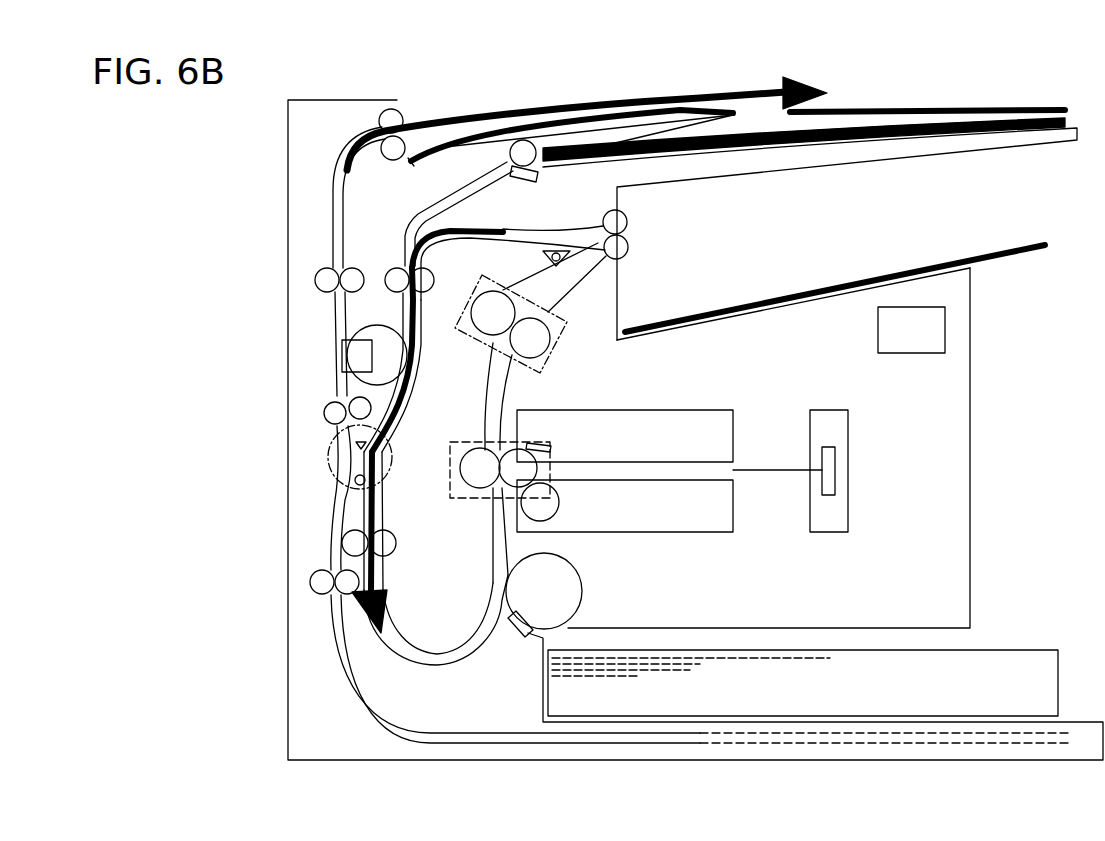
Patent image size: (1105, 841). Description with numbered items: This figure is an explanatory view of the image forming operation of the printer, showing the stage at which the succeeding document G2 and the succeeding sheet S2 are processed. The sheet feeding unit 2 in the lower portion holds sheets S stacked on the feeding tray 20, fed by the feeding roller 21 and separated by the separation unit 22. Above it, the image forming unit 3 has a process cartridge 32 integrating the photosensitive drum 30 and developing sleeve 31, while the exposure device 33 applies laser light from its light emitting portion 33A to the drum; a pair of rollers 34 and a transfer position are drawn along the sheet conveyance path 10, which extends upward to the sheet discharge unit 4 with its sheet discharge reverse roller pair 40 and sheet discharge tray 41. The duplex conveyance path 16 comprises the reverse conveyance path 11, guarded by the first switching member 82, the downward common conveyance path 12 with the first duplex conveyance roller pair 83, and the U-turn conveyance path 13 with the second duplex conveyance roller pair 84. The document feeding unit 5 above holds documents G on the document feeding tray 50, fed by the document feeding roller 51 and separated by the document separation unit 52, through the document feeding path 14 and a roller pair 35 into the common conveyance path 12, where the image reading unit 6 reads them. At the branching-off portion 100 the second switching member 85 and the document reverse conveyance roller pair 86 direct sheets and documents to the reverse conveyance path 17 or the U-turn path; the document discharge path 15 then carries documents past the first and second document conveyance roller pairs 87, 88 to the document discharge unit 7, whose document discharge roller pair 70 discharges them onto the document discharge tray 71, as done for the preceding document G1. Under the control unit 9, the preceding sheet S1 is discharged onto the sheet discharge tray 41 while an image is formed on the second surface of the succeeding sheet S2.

The document discharge unit 7 is at (488, 62).
The document discharge roller pair 70 is at (379, 124).
The document discharge tray 71 is at (457, 137).
The document feeding roller 51 is at (524, 138).
The succeeding document G2 is at (632, 99).
The document feeding unit 5 is at (740, 122).
The preceding document G1 is at (866, 110).
The document G is at (906, 118).
The document feeding tray 50 is at (1059, 130).
The document discharge path 15 is at (334, 194).
The document feeding path 14 is at (430, 206).
The document separation unit 52 is at (535, 181).
The sheet discharge unit 4 is at (734, 232).
The preceding sheet S1 is at (1045, 248).
The second document conveyance roller pair 88 is at (314, 280).
The first duplex conveyance roller pair 83 is at (393, 271).
The reverse conveyance path 11 is at (465, 238).
The first switching member 82 is at (562, 266).
The sheet discharge reverse roller pair 40 is at (630, 245).
The sheet discharge tray 41 is at (712, 320).
The image reading unit 6 is at (348, 338).
The conveyance roller pair 35 is at (558, 356).
The image forming unit 3 is at (760, 386).
The control unit 9 is at (913, 356).
The first document conveyance roller pair 87 is at (326, 412).
The sheet conveyance path 10 is at (486, 395).
The process cartridge 32 is at (716, 410).
The common conveyance path 12 is at (396, 394).
The photosensitive drum 30 is at (550, 448).
The exposure device 33 is at (850, 445).
The second switching member 85 is at (350, 464).
The branching-off portion 100 is at (335, 466).
The light emitting portion 33A is at (838, 492).
The reverse conveyance path 17 is at (338, 512).
The second duplex conveyance roller pair 84 is at (383, 534).
The developing sleeve 31 is at (562, 500).
The registration roller pair 34 is at (472, 488).
The U-turn conveyance path 13 is at (378, 570).
The document reverse conveyance roller pair 86 is at (310, 586).
The feeding roller 21 is at (584, 590).
The sheet feeding unit 2 is at (836, 650).
The sheet S is at (1028, 652).
The succeeding sheet S2 is at (351, 620).
The separation unit 22 is at (518, 634).
The duplex conveyance path 16 is at (432, 665).
The feeding tray 20 is at (546, 698).